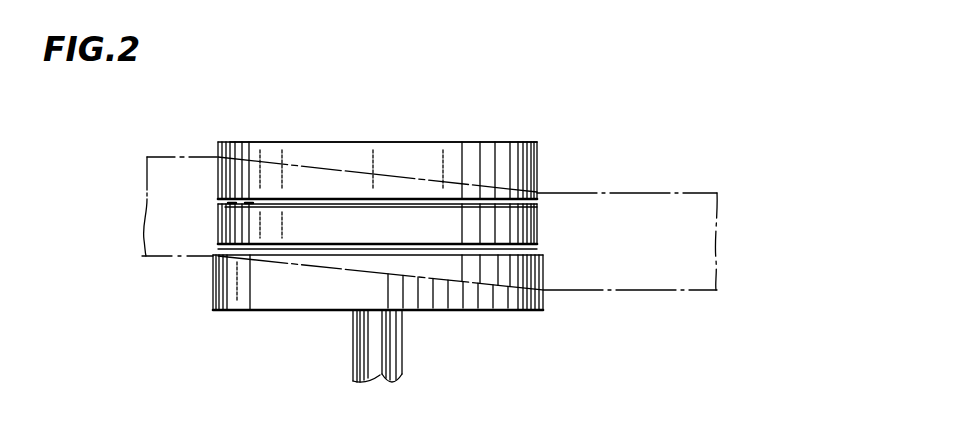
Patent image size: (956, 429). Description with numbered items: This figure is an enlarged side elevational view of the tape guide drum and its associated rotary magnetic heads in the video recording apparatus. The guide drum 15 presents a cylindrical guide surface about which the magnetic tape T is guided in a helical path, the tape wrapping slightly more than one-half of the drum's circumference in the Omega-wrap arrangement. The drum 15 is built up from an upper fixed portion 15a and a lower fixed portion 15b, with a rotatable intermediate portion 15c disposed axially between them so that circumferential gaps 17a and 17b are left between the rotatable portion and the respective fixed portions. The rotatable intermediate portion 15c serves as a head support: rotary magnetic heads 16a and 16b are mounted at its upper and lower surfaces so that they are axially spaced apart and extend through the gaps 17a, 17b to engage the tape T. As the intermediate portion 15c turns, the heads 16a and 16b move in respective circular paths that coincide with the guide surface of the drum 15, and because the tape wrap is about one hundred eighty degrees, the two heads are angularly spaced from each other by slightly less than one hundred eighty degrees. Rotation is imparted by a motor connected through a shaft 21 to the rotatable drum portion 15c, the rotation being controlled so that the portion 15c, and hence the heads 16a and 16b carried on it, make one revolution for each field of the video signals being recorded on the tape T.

The guide drum 15 is at (385, 141).
The upper fixed portion 15a is at (423, 295).
The lower fixed portion 15b is at (552, 116).
The rotatable intermediate portion 15c is at (523, 228).
The rotary magnetic head 16a is at (616, 268).
The rotary magnetic head 16b is at (244, 199).
The circumferential gap 17a is at (313, 255).
The circumferential gap 17b is at (352, 205).
The shaft 21 is at (388, 334).
The magnetic tape T is at (646, 193).